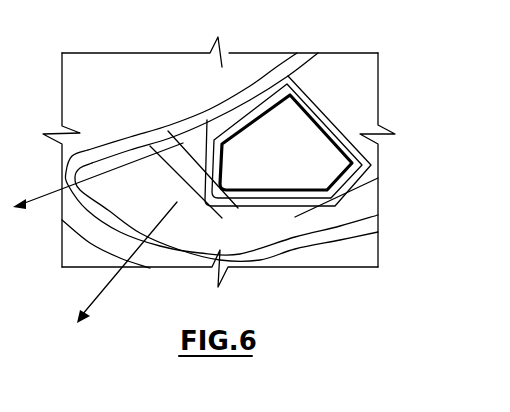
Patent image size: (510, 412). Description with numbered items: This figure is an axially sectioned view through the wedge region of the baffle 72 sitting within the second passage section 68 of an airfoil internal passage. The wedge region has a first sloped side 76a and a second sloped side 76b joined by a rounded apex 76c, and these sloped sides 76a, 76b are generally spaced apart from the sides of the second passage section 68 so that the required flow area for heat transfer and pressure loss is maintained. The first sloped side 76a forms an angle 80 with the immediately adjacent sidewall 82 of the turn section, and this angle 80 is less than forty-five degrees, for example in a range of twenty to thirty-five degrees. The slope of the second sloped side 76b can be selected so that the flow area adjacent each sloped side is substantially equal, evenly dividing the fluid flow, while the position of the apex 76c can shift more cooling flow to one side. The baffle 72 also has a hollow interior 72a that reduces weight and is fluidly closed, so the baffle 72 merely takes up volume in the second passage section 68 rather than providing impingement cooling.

The second passage section 68 is at (312, 204).
The baffle 72 is at (256, 195).
The hollow interior 72a is at (297, 144).
The first sloped side 76a is at (197, 111).
The second sloped side 76b is at (297, 206).
The apex 76c is at (203, 196).
The angle 80 is at (229, 121).
The sidewall 82 is at (213, 103).